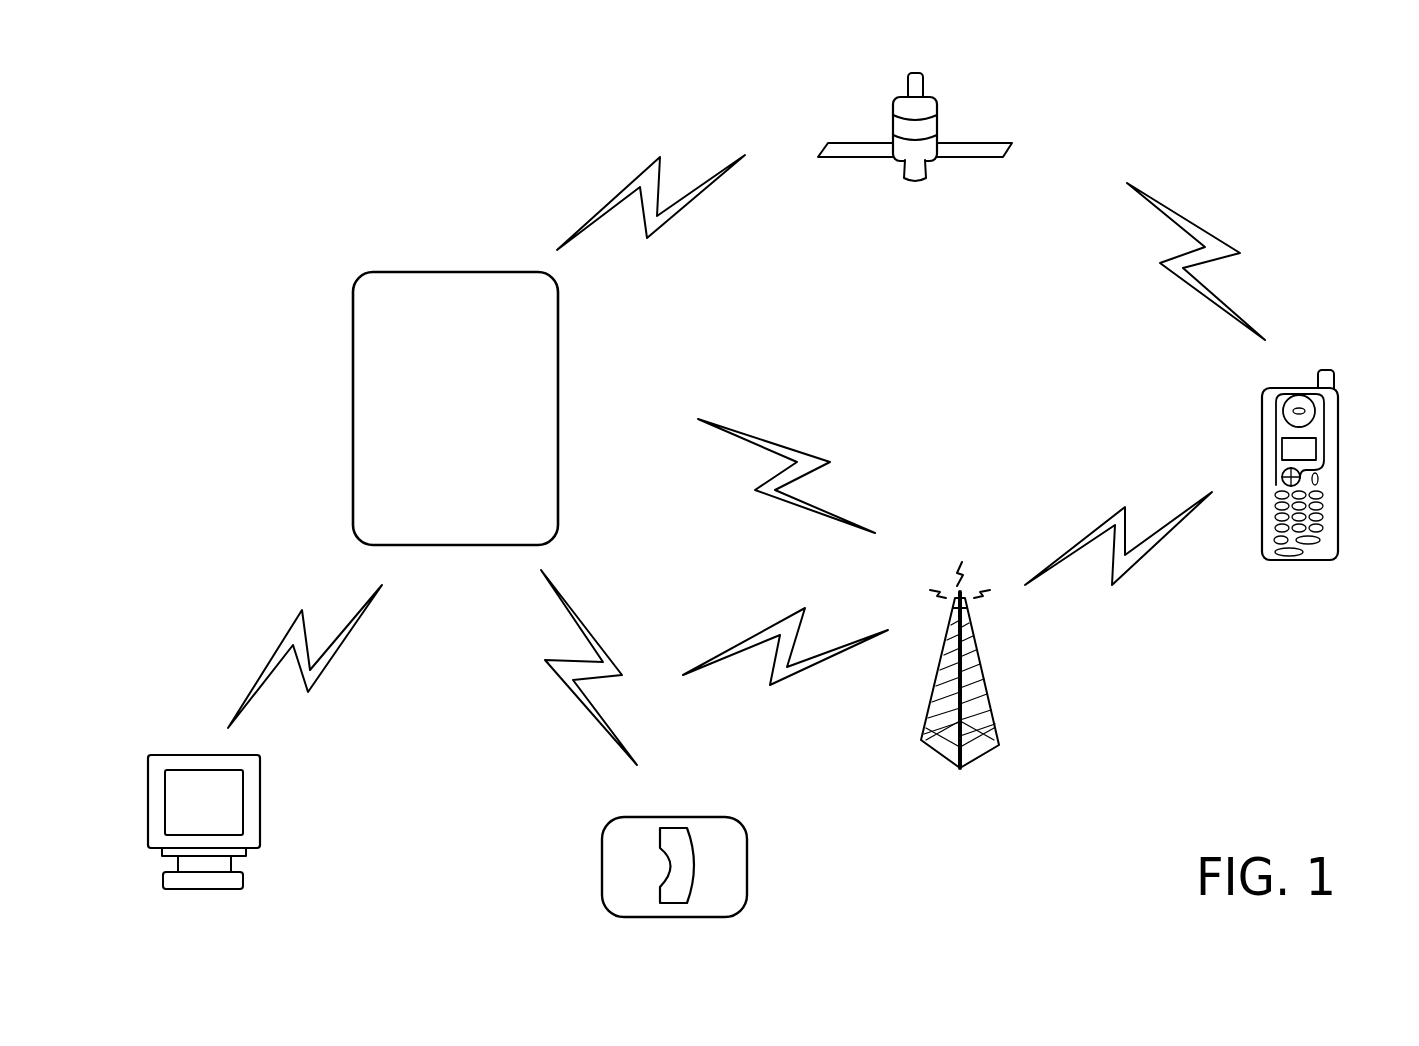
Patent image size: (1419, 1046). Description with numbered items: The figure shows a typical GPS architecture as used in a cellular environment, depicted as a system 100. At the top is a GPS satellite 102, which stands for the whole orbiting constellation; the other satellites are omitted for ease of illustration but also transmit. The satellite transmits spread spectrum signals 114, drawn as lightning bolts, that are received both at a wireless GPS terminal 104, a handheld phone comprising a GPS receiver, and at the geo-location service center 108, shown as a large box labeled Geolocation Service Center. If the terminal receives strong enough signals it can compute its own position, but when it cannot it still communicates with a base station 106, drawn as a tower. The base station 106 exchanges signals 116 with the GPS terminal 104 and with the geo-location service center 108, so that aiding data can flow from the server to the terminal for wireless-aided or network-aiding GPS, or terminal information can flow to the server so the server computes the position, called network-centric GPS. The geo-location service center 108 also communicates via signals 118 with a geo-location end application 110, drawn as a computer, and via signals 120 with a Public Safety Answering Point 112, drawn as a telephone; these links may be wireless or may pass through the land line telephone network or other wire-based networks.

The system 100 is at (353, 156).
The GPS satellite 102 is at (973, 140).
The wireless GPS terminal 104 is at (1335, 468).
The base station 106 is at (993, 717).
The geo-location service center 108 is at (456, 270).
The geo-location end application 110 is at (206, 755).
The Public Safety Answering Point 112 is at (650, 817).
The spread spectrum signals 114 is at (641, 176).
The signals 116 is at (745, 432).
The signals 118 is at (287, 623).
The signals 120 is at (570, 608).